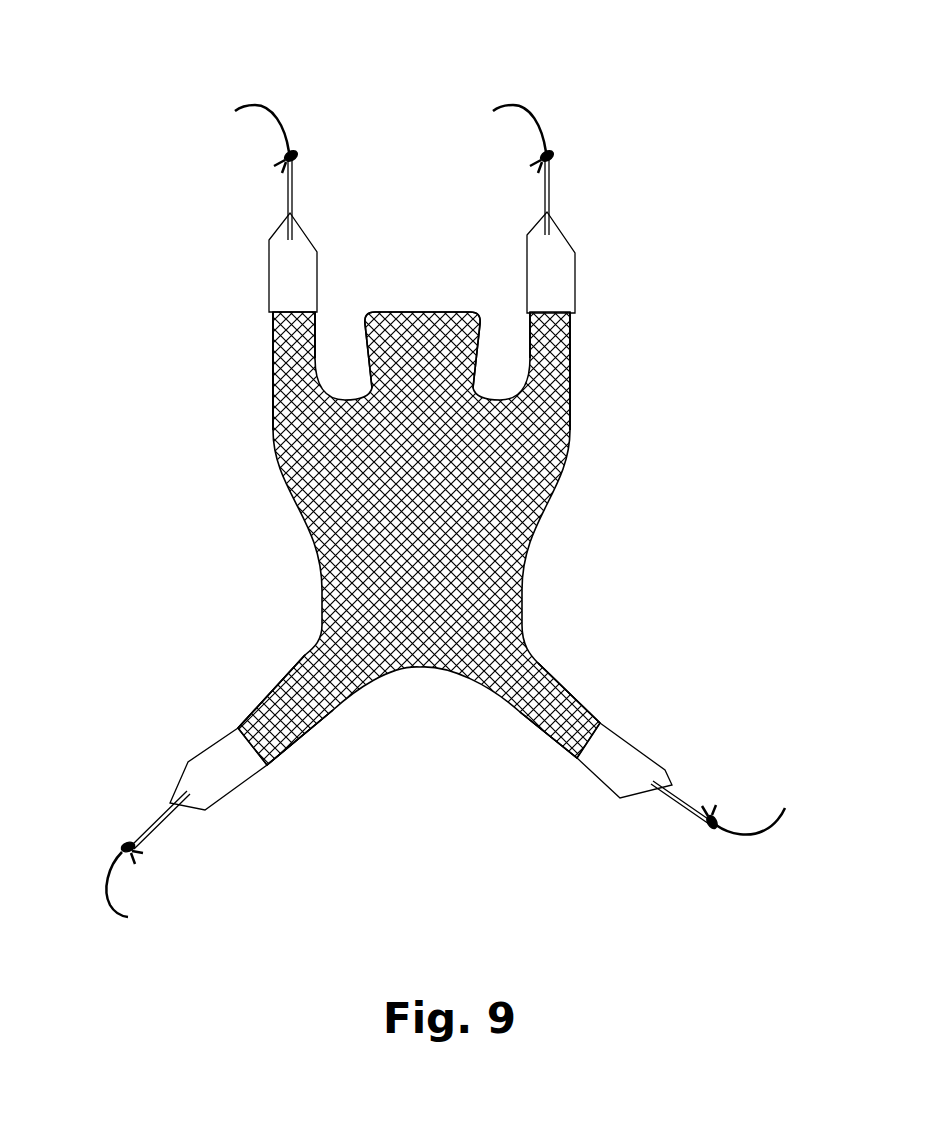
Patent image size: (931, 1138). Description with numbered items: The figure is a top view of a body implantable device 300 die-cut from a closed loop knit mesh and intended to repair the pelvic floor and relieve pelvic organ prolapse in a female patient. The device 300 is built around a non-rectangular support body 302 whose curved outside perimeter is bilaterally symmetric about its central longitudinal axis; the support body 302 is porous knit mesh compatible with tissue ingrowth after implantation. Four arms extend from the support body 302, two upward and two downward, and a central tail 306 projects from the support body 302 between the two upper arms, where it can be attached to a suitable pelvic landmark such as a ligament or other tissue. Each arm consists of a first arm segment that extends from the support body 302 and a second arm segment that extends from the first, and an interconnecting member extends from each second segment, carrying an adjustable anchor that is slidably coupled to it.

The body implantable device 300 is at (458, 514).
The support body 302 is at (287, 476).
The central tail 306 is at (425, 310).